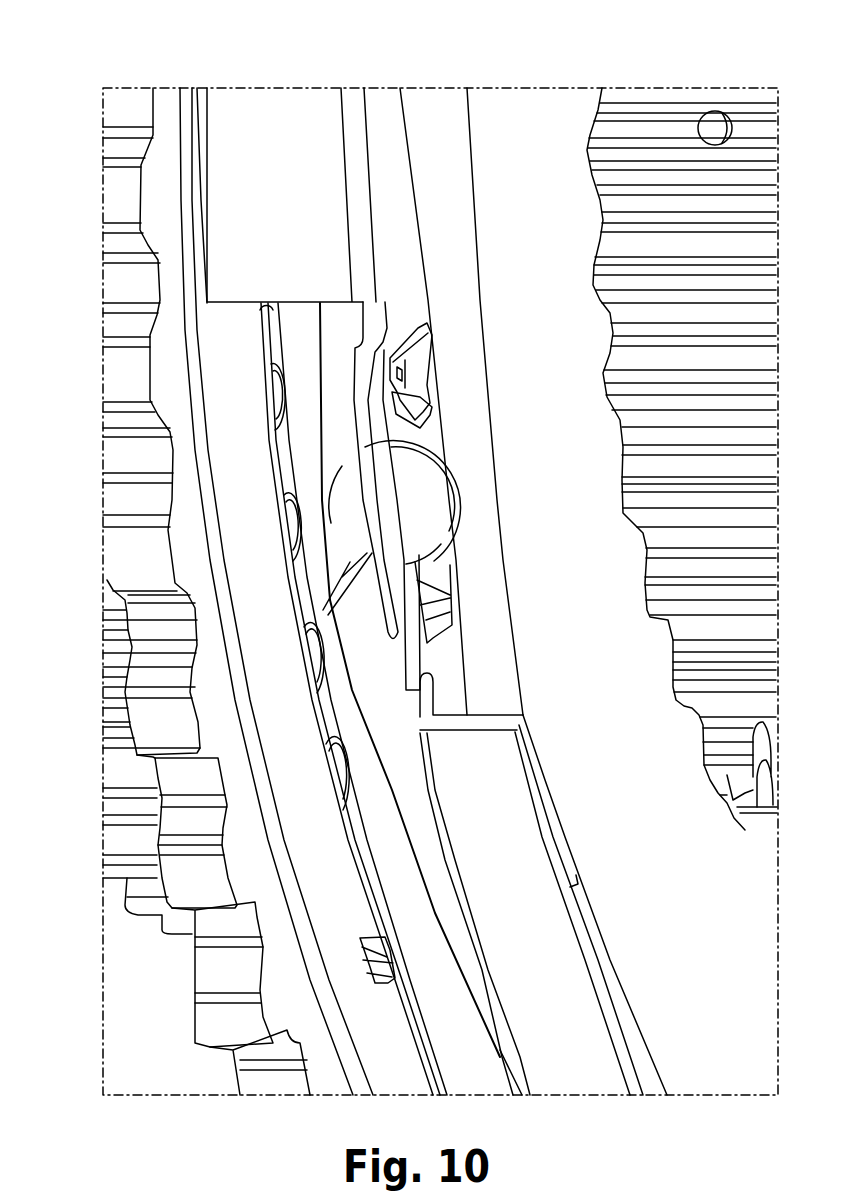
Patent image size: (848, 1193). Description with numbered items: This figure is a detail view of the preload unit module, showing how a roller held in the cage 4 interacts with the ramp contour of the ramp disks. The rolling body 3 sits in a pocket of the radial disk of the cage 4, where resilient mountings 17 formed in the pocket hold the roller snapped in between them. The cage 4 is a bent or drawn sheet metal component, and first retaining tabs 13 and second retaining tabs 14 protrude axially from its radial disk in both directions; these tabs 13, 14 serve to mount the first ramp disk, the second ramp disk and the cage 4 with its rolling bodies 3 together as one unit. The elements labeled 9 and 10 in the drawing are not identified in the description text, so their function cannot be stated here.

The rolling body 3 is at (433, 505).
The cage 4 is at (395, 605).
The rail 9 is at (318, 447).
The housing strip 10 is at (395, 818).
The first retaining tab 13 is at (285, 132).
The second retaining tab 14 is at (500, 845).
The resilient mounting 17 is at (417, 400).